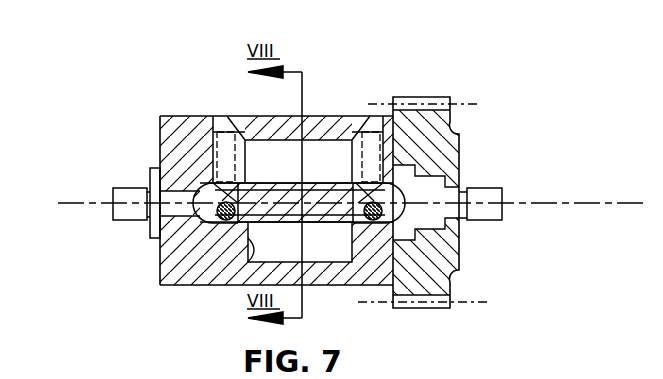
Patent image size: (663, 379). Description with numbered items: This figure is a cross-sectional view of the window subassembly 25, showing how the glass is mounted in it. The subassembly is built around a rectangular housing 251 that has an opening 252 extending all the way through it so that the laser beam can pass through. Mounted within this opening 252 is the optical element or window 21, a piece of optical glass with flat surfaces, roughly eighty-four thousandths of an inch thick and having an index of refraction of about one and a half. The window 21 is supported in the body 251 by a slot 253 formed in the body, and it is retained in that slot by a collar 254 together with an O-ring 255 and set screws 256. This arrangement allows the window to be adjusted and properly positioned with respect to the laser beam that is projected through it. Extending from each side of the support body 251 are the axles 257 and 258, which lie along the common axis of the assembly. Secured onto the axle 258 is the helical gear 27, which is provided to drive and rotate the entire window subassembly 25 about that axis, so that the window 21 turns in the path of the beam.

The window 21 is at (330, 220).
The window subassembly 25 is at (522, 114).
The helical gear 27 is at (447, 148).
The housing 251 is at (172, 273).
The opening 252 is at (248, 160).
The slot 253 is at (446, 130).
The collar 254 is at (197, 187).
The O-ring 255 is at (200, 224).
The set screws 256 is at (233, 130).
The axle 257 is at (122, 193).
The axle 258 is at (486, 195).